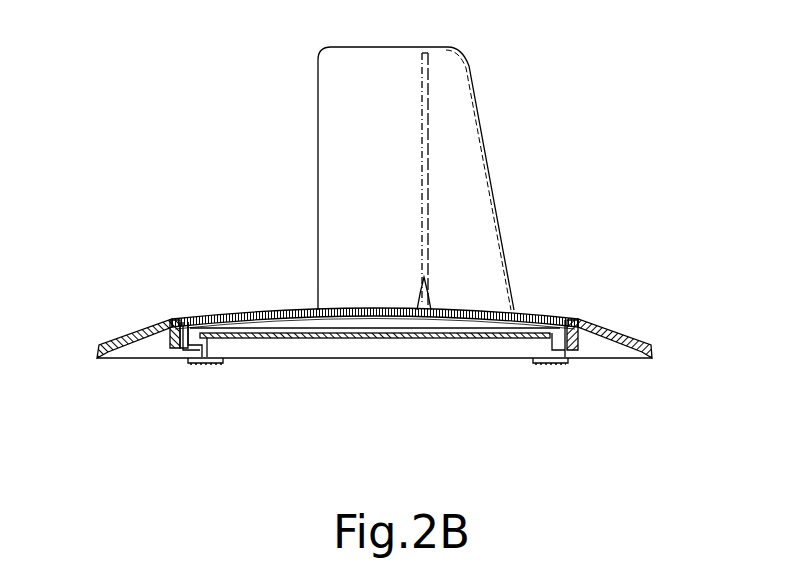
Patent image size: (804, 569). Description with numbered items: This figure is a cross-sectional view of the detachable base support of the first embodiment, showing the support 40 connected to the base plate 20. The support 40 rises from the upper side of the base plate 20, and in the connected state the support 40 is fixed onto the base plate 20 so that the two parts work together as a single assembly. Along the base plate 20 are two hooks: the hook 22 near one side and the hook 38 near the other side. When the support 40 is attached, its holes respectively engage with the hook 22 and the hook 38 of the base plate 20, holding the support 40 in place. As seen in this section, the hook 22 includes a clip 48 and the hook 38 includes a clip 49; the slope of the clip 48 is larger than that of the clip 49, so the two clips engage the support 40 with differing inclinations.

The base plate 20 is at (629, 352).
The hook 22 is at (166, 352).
The hook 38 is at (586, 352).
The support 40 is at (465, 181).
The clip 48 is at (178, 320).
The clip 49 is at (553, 313).